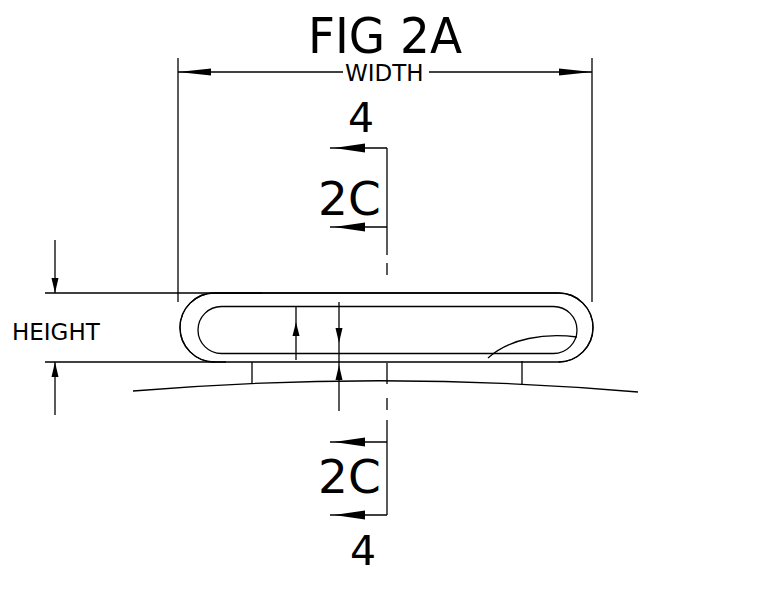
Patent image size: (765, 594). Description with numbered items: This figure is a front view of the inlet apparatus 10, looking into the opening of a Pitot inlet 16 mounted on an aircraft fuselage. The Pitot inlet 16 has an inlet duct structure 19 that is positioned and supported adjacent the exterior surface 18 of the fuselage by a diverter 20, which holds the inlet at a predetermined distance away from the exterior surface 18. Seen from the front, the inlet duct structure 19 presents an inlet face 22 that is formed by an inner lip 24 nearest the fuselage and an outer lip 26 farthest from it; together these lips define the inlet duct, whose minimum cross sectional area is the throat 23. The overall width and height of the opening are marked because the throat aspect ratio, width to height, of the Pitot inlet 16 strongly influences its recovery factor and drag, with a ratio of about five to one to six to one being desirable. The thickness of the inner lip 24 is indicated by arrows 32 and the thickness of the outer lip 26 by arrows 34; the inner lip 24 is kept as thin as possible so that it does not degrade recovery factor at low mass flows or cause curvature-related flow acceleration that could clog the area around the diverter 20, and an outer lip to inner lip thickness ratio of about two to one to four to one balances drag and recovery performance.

The inlet apparatus 10 is at (130, 138).
The Pitot inlet 16 is at (328, 292).
The exterior surface 18 is at (622, 387).
The inlet duct structure 19 is at (593, 322).
The diverter 20 is at (283, 373).
The inlet face 22 is at (182, 320).
The throat 23 is at (462, 322).
The inner lip 24 is at (577, 337).
The outer lip 26 is at (423, 302).
The thickness of the inner lip 32 is at (339, 411).
The thickness of the outer lip 34 is at (296, 292).